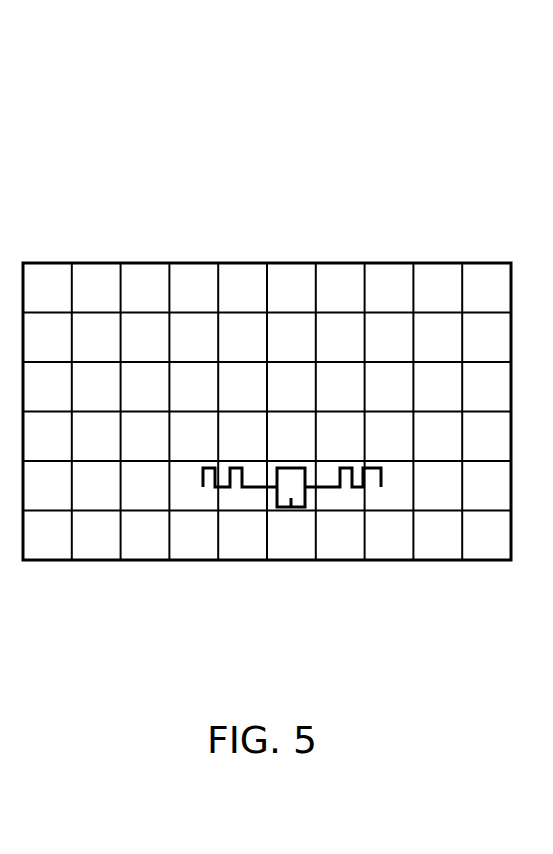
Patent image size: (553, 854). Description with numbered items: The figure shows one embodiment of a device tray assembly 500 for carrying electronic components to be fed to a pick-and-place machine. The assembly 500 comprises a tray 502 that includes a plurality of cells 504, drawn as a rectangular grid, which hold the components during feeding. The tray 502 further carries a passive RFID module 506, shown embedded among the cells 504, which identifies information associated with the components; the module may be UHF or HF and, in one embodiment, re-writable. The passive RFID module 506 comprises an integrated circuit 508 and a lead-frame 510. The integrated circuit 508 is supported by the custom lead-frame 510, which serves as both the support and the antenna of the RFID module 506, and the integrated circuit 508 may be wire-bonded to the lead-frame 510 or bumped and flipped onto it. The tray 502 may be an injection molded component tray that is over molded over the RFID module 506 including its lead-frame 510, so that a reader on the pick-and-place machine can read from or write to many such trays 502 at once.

The device tray assembly 500 is at (263, 51).
The tray 502 is at (388, 262).
The cells 504 is at (338, 380).
The passive RFID module 506 is at (257, 511).
The integrated circuit 508 is at (295, 507).
The lead-frame 510 is at (325, 487).